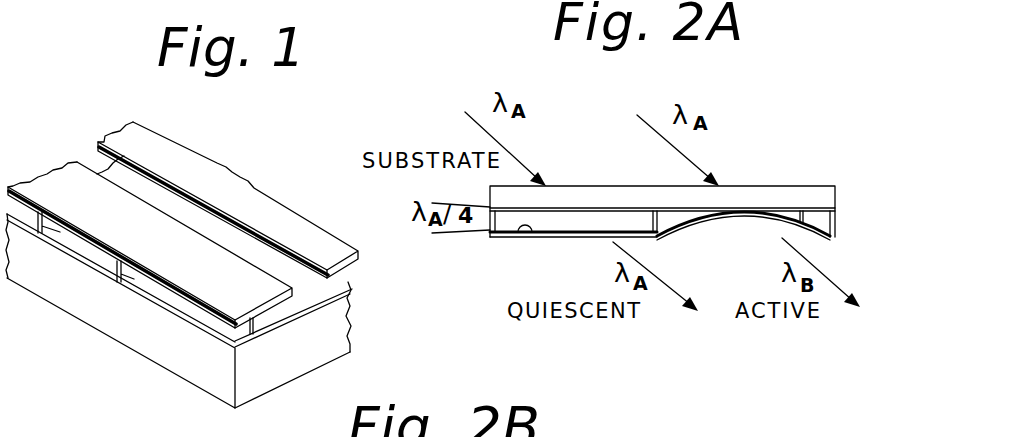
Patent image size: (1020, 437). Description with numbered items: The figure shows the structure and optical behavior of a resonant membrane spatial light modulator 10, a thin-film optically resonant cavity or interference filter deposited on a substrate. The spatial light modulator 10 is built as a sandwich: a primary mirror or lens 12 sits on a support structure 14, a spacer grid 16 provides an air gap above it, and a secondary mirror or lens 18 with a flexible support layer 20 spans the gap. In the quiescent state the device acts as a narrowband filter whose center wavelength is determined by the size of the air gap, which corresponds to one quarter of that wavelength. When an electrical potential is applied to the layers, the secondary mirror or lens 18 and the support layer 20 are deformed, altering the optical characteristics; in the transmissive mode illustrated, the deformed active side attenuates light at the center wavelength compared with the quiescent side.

In FIG. 1, the resonant membrane spatial light modulator 10 is at (233, 154).
In FIG. 2A, the resonant membrane spatial light modulator 10 is at (778, 156).
In FIG. 1, the primary mirror or lens 12 is at (262, 332).
In FIG. 2A, the primary mirror or lens 12 is at (813, 237).
In FIG. 1, the support structure 14 is at (201, 370).
In FIG. 2A, the support structure 14 is at (763, 186).
In FIG. 1, the spacer grid 16 is at (122, 265).
In FIG. 2A, the spacer grid 16 is at (655, 220).
In FIG. 1, the secondary mirror or lens 18 is at (252, 318).
In FIG. 2A, the secondary mirror or lens 18 is at (520, 236).
In FIG. 1, the flexible support layer 20 is at (300, 312).
In FIG. 2A, the flexible support layer 20 is at (750, 226).